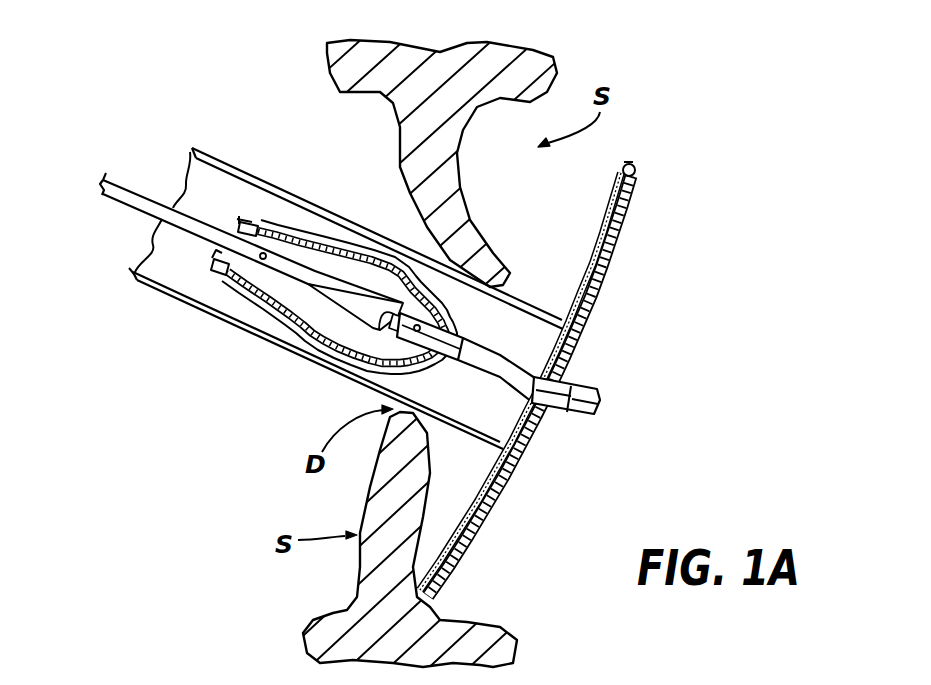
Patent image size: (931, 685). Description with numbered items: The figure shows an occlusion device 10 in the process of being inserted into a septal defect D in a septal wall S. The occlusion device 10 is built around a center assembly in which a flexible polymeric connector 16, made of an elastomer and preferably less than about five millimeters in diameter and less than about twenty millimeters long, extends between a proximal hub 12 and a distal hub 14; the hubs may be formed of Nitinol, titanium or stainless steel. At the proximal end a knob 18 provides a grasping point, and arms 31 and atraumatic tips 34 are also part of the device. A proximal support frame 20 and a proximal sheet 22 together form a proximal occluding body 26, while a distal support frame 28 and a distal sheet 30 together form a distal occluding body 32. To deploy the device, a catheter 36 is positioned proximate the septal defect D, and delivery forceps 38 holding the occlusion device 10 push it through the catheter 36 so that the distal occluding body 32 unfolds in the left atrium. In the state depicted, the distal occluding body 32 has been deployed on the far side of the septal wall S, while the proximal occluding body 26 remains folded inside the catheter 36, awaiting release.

The occlusion device 10 is at (722, 97).
The proximal hub 12 is at (380, 403).
The distal hub 14 is at (598, 410).
The flexible polymeric connector 16 is at (522, 338).
The knob 18 is at (303, 370).
The proximal support frame 20 is at (233, 300).
The proximal sheet 22 is at (250, 318).
The proximal occluding body 26 is at (262, 452).
The distal support frame 28 is at (624, 178).
The distal sheet 30 is at (625, 270).
The arms 31 is at (620, 238).
The distal occluding body 32 is at (658, 420).
The atraumatic tips 34 is at (213, 263).
The catheter 36 is at (305, 185).
The delivery forceps 38 is at (137, 192).